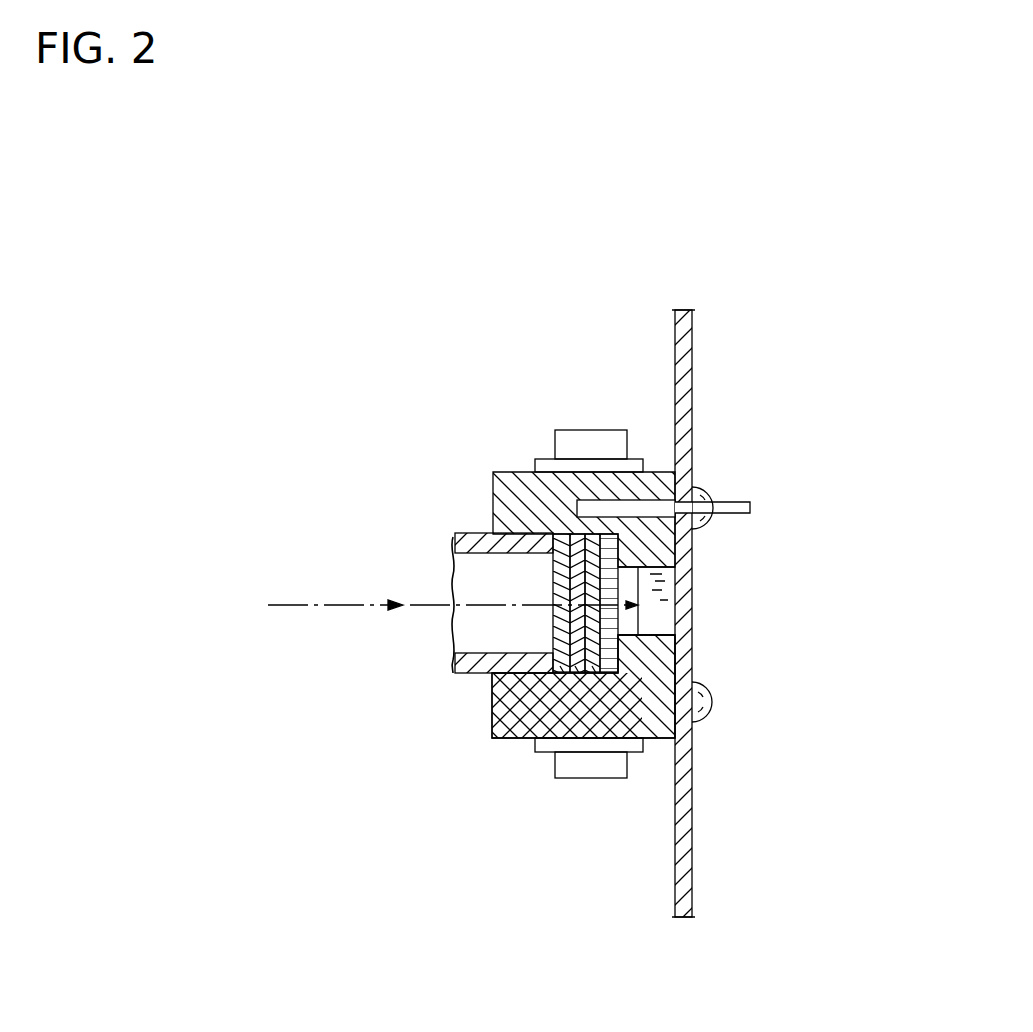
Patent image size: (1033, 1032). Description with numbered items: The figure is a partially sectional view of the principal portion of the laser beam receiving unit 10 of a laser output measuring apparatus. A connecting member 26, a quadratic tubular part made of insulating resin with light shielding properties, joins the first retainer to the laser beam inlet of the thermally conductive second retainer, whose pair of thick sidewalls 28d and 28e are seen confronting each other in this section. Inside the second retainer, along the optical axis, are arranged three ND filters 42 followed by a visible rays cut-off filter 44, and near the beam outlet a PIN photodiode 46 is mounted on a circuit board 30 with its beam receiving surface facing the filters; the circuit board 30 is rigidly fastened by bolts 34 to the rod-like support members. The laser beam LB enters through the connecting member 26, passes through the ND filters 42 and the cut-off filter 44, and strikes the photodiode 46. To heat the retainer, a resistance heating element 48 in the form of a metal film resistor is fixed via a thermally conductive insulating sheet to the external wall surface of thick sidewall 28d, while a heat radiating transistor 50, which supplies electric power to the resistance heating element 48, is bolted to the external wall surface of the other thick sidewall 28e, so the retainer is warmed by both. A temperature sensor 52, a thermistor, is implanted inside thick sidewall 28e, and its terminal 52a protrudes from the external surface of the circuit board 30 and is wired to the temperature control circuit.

The laser beam receiving unit 10 is at (438, 558).
The connecting member 26 is at (467, 533).
The thick sidewall 28d is at (500, 700).
The thick sidewall 28e is at (510, 483).
The circuit board 30 is at (693, 332).
The bolts 34 is at (705, 718).
The ND filters 42 is at (593, 677).
The visible rays cut-off filter 44 is at (623, 552).
The PIN photodiode 46 is at (662, 610).
The resistance heating element 48 is at (588, 768).
The transistor 50 is at (582, 440).
The temperature sensor 52 is at (668, 472).
The terminal 52a is at (745, 498).
The laser beam LB is at (429, 610).